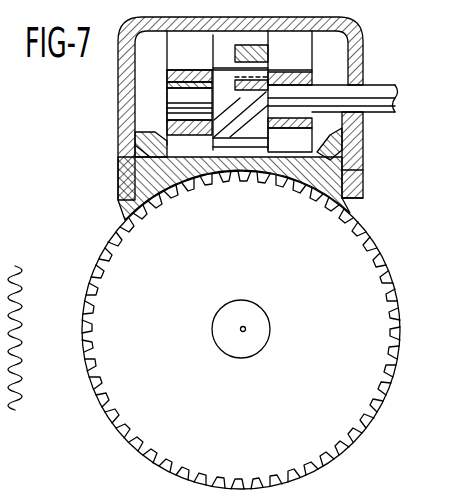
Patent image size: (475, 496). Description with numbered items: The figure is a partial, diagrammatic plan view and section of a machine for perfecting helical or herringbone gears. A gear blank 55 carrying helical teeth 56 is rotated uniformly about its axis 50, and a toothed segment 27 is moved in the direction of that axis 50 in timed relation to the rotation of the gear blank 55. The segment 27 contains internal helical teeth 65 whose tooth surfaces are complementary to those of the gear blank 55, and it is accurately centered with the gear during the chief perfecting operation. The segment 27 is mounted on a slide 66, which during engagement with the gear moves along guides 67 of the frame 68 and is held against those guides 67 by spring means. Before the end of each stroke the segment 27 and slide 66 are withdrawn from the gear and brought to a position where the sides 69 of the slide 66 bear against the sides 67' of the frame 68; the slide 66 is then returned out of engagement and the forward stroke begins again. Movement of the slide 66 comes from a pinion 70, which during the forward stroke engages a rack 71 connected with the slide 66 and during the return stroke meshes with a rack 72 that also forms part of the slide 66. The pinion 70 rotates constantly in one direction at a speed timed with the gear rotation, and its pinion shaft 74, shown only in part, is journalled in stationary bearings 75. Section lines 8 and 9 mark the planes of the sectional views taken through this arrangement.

The frame 68 is at (357, 63).
The stationary bearings 75 is at (167, 70).
The rack 71 is at (269, 57).
The pinion 70 is at (237, 115).
The pinion shaft 74 is at (397, 93).
The rack 72 is at (256, 147).
The sides of slide 69 is at (133, 165).
The guides 67 is at (367, 155).
The sides of frame 67' is at (244, 312).
The slide 66 is at (360, 183).
The toothed segment 27 is at (347, 203).
The internal helical teeth 65 is at (309, 192).
The helical teeth 56 is at (117, 233).
The gear blank 55 is at (123, 280).
The gear axis 50 is at (244, 327).
The section line 8- 8 is at (118, 331).
The section line 9- 9 is at (207, 12).